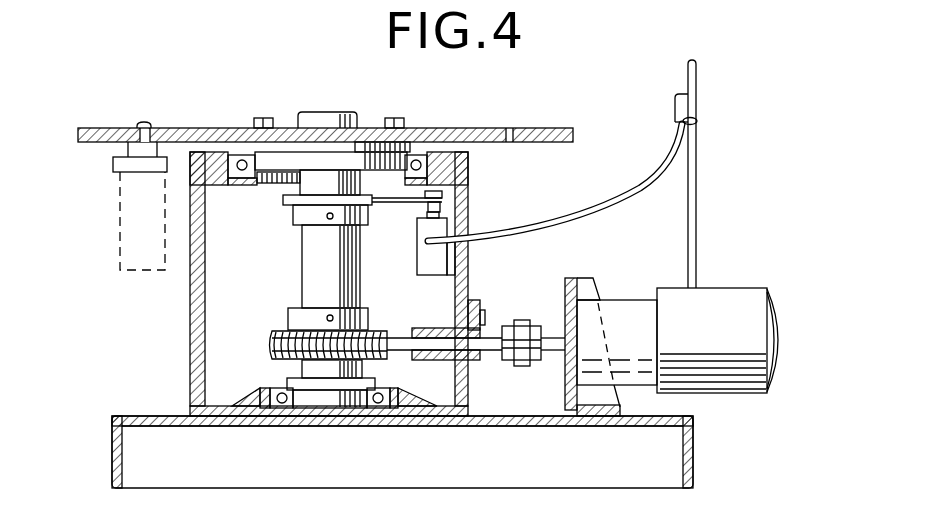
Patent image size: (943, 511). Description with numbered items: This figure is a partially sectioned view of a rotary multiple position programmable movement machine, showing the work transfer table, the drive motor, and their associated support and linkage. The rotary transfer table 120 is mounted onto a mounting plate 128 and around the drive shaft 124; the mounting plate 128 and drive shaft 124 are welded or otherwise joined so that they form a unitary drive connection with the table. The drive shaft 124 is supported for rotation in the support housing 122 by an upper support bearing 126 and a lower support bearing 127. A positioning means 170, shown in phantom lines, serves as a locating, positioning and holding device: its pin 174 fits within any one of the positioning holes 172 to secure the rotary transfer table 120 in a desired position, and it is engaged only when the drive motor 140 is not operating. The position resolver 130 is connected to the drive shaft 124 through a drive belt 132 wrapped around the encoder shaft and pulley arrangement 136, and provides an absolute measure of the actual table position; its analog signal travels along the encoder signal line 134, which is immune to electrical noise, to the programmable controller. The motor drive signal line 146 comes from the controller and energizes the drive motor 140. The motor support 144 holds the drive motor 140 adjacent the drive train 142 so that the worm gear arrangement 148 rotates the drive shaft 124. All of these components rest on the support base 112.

The support base 112 is at (694, 446).
The rotary transfer table 120 is at (541, 127).
The support housing 122 is at (190, 345).
The drive shaft 124 is at (328, 110).
The upper support bearing 126 is at (238, 158).
The lower support bearing 127 is at (295, 396).
The mounting plate 128 is at (368, 142).
The position resolver 130 is at (455, 215).
The drive belt 132 is at (388, 206).
The encoder signal line 134 is at (586, 212).
The encoder shaft and pulley arrangement 136 is at (465, 188).
The drive motor 140 is at (733, 292).
The drive train 142 is at (520, 316).
The motor support 144 is at (592, 290).
The motor drive signal line 146 is at (697, 193).
The worm gear arrangement 148 is at (255, 324).
The positioning means 170 is at (108, 218).
The positioning holes 172 is at (508, 127).
The pin 174 is at (143, 126).